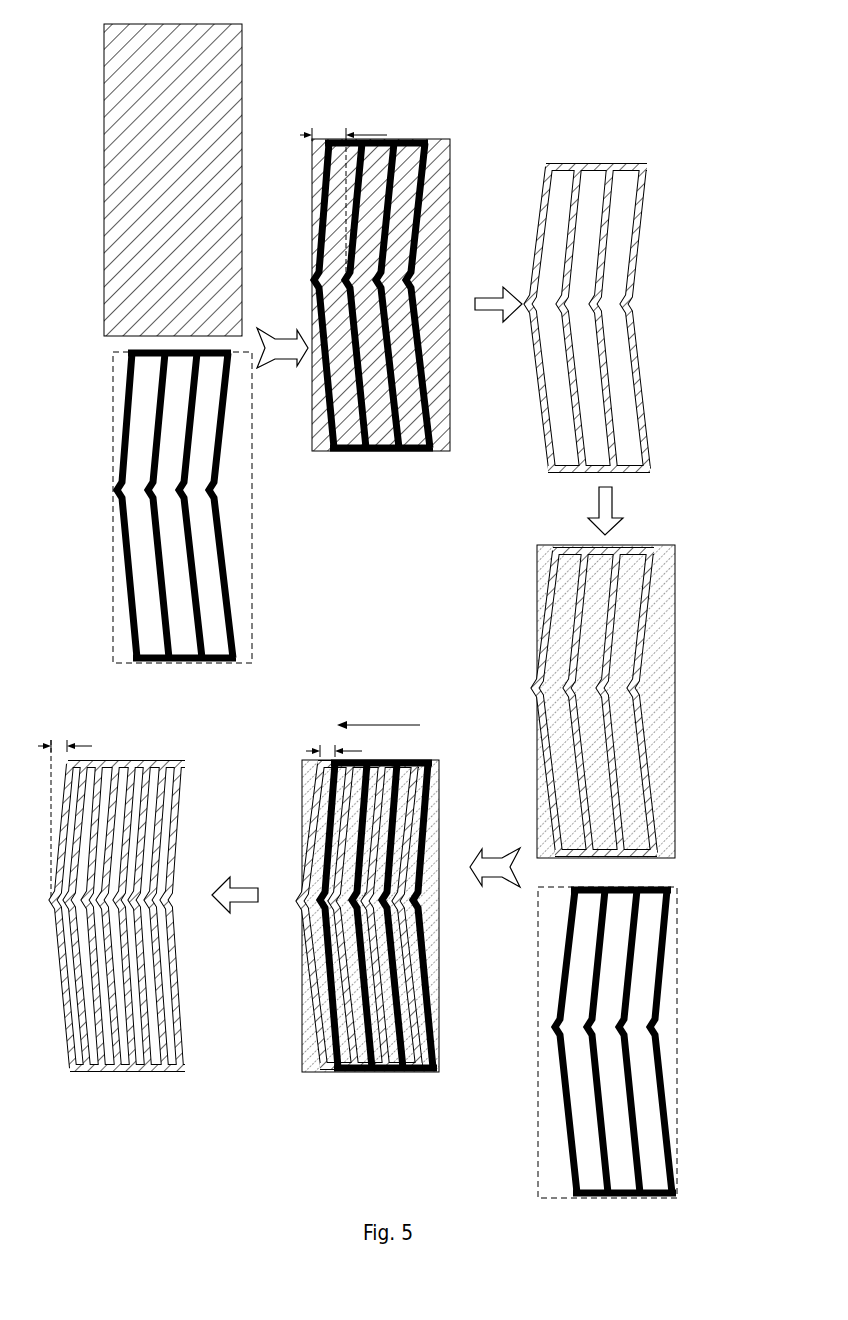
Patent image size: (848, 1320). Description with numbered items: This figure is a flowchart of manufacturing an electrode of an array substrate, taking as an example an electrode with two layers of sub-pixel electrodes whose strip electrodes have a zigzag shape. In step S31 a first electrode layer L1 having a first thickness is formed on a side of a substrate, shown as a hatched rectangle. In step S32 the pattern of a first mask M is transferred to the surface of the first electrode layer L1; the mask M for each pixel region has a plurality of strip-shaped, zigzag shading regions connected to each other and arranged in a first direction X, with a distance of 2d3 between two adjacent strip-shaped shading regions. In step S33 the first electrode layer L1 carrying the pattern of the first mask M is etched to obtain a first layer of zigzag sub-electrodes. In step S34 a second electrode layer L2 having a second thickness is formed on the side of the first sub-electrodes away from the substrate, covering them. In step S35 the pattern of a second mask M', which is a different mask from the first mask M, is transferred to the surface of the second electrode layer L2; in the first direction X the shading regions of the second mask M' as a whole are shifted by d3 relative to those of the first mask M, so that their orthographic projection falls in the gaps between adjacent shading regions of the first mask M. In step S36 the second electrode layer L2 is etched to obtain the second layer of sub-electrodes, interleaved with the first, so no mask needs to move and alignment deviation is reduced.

The first electrode layer forming step S31 is at (180, 13).
The first mask pattern transferring step S32 is at (282, 333).
The first electrode layer etching step S33 is at (494, 291).
The second electrode layer forming step S34 is at (621, 511).
The second mask pattern transferring step S35 is at (491, 852).
The second electrode layer etching step S36 is at (233, 880).
The first electrode layer L1 is at (292, 53).
The second electrode layer L2 is at (720, 530).
The first mask M is at (210, 507).
The second mask M' is at (640, 1042).
The distance between adjacent strip-shaped shading regions 2d3 is at (346, 125).
The first distance d3 is at (201, 813).
The first direction X is at (378, 715).